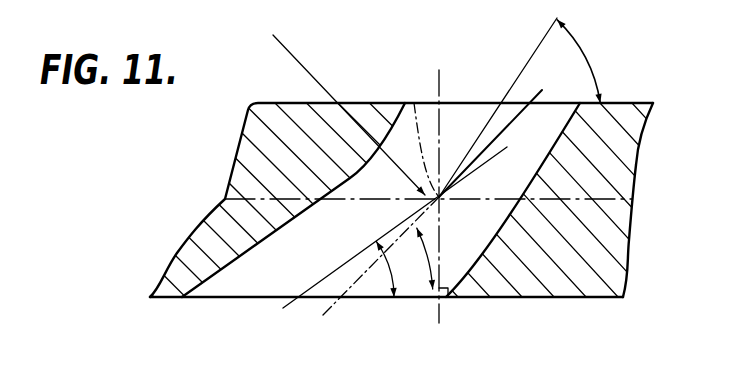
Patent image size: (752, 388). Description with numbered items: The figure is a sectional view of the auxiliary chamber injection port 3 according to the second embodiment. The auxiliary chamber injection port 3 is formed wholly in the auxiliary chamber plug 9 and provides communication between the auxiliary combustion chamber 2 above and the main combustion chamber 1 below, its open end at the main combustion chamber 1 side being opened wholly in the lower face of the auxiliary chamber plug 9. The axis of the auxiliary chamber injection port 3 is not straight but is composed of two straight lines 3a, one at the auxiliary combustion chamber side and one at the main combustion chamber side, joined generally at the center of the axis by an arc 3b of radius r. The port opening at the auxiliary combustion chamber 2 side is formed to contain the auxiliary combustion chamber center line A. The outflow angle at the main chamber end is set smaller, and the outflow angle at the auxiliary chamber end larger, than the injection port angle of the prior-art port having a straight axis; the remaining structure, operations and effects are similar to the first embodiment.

The main combustion chamber 1 is at (242, 298).
The auxiliary combustion chamber 2 is at (457, 103).
The auxiliary chamber injection port 3 is at (548, 120).
The straight lines 3a is at (510, 87).
The arc 3b is at (418, 104).
The auxiliary chamber plug 9 is at (490, 282).
The radius r is at (349, 110).
The auxiliary combustion chamber center line A is at (438, 197).